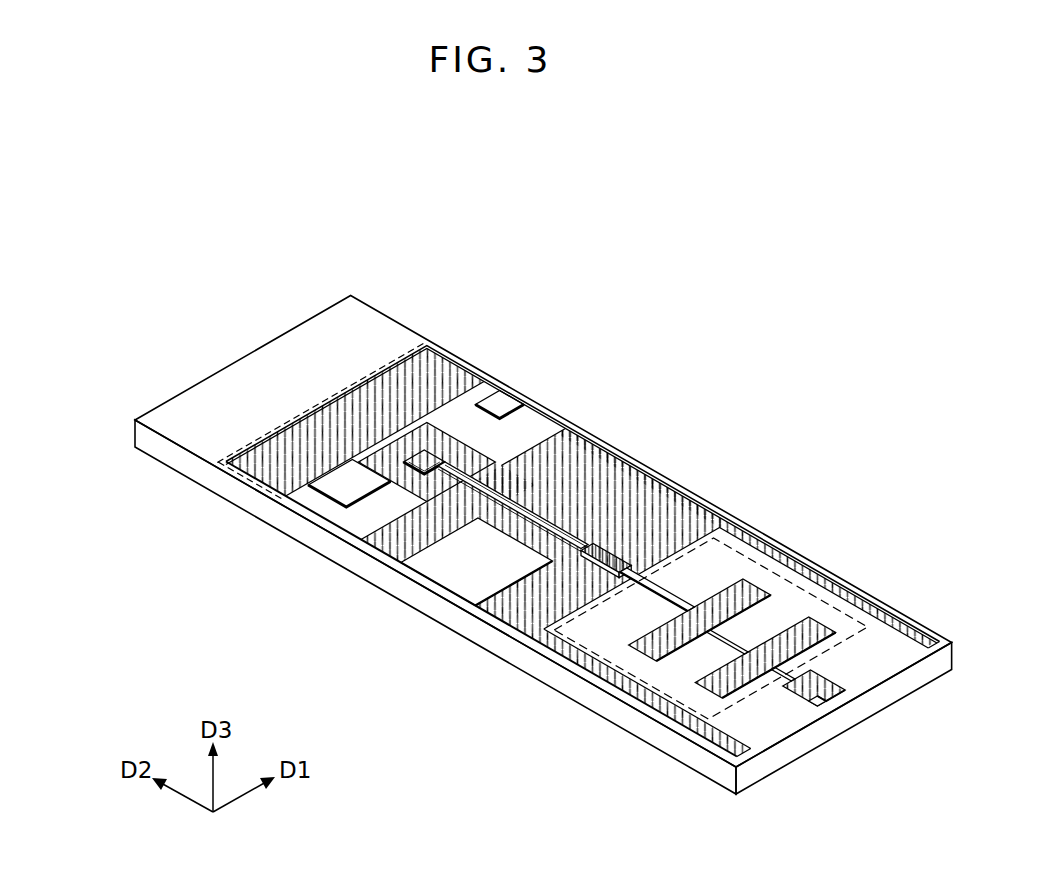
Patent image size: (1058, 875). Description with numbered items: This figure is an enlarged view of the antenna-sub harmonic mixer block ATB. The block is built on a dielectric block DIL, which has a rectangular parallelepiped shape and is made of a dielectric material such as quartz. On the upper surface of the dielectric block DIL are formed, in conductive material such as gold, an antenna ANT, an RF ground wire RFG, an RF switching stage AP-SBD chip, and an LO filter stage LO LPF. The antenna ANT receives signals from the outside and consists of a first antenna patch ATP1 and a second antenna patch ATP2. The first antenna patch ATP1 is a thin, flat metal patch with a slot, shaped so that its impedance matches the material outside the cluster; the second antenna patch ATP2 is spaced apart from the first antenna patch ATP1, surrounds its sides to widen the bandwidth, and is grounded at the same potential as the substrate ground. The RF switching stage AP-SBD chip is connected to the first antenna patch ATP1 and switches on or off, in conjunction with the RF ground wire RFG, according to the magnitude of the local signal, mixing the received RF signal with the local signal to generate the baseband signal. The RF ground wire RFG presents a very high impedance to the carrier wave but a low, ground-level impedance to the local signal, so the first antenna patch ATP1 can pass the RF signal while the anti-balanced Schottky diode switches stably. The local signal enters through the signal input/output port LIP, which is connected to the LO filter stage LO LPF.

The antenna-sub harmonic mixer block ATB is at (850, 293).
The dielectric block DIL is at (135, 437).
The antenna ANT is at (578, 507).
The first antenna patch ATP1 is at (452, 452).
The second antenna patch ATP2 is at (430, 350).
The RF ground wire RFG is at (307, 490).
The RF switching stage AP-SBD chip is at (613, 548).
The LO filter stage LO LPF is at (785, 578).
The signal input/output port LIP is at (822, 688).